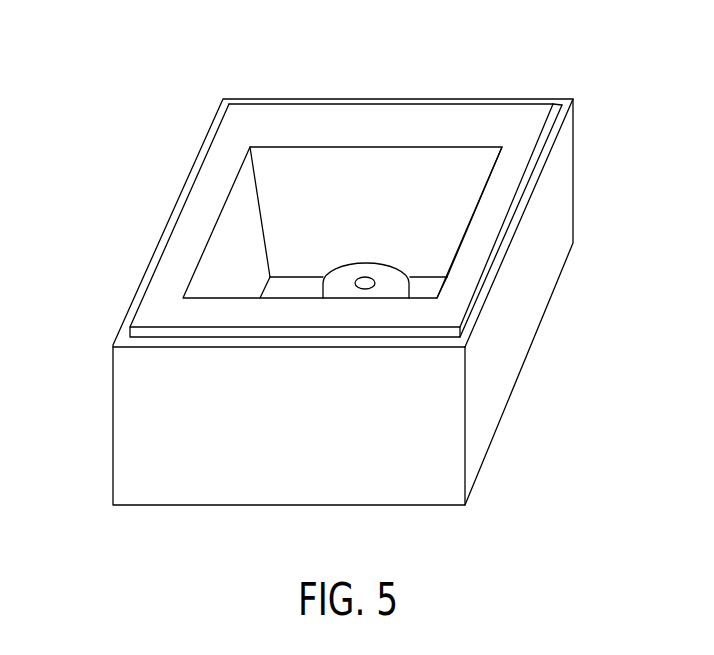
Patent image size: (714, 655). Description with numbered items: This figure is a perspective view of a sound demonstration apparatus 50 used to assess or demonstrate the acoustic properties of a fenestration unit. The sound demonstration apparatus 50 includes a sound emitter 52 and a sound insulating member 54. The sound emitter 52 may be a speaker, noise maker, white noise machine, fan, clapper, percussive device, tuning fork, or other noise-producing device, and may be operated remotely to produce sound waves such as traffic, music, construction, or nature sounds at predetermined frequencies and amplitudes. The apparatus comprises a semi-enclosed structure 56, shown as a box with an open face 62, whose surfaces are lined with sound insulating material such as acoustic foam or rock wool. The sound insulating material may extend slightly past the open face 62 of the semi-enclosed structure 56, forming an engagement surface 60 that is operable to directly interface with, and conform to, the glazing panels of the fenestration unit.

The sound demonstration apparatus 50 is at (360, 259).
The sound emitter 52 is at (388, 280).
The sound insulating member 54 is at (519, 120).
The semi-enclosed structure 56 is at (558, 185).
The engagement surface 60 is at (343, 113).
The open face 62 is at (378, 180).